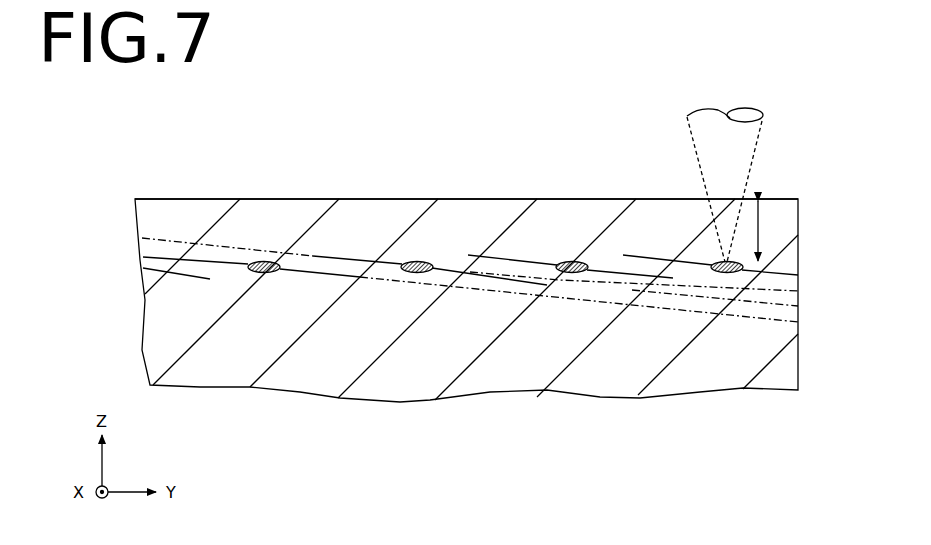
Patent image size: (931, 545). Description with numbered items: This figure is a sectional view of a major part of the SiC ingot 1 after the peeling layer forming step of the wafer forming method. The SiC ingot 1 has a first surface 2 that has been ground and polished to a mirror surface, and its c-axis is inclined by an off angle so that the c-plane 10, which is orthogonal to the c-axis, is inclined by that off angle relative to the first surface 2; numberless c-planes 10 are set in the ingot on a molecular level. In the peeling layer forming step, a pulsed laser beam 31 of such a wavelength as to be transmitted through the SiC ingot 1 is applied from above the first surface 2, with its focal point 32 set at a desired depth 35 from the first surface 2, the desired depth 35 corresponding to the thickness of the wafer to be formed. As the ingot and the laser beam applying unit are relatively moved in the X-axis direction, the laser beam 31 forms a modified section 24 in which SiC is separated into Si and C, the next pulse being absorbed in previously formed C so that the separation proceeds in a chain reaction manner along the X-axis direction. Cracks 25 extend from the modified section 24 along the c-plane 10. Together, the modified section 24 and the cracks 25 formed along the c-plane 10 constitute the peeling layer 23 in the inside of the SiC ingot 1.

The SiC ingot 1 is at (466, 273).
The first surface 2 is at (571, 199).
The c-plane 10 is at (588, 298).
The peeling layer 23 is at (470, 198).
The modified section 24 is at (257, 261).
The cracks 25 is at (252, 147).
The laser beam 31 is at (753, 185).
The focal point 32 is at (800, 291).
The desired depth 35 is at (762, 236).